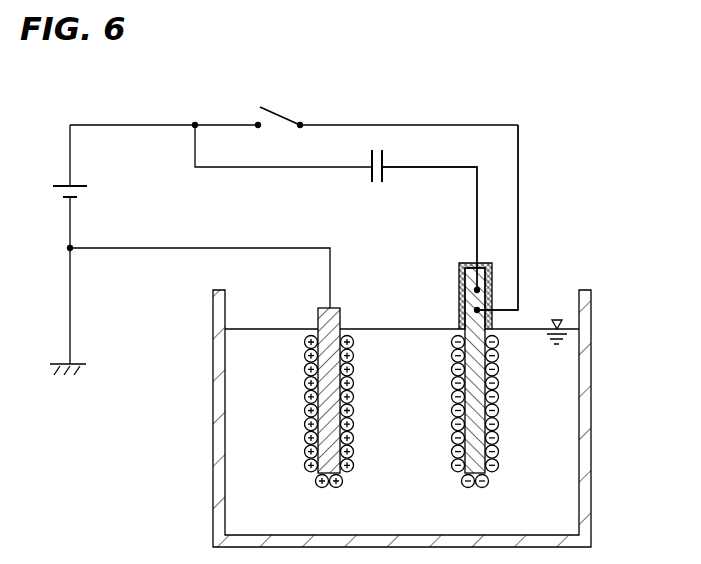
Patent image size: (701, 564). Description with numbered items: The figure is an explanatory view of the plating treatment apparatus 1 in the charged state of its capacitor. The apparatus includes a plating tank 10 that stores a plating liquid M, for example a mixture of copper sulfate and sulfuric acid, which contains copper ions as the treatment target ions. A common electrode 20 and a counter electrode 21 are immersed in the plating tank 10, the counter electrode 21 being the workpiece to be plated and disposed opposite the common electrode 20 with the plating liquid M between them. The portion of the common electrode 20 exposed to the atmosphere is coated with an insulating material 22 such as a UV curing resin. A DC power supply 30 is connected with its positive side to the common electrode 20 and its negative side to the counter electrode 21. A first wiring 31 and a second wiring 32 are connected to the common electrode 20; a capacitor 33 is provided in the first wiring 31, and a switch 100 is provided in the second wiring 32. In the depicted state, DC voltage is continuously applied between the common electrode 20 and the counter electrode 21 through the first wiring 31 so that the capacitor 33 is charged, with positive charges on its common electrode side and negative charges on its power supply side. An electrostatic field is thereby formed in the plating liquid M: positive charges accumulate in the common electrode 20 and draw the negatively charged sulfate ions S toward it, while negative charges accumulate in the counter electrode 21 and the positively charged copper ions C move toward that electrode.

The plating treatment apparatus 1 is at (353, 86).
The switch 100 is at (283, 117).
The DC power supply 30 is at (64, 184).
The capacitor 33 is at (367, 176).
The second wiring 32 is at (520, 176).
The first wiring 31 is at (476, 226).
The insulating material 22 is at (461, 289).
The counter electrode 21 is at (330, 437).
The common electrode 20 is at (494, 446).
The plating tank 10 is at (586, 442).
The plating liquid M is at (568, 362).
The copper ions C is at (338, 488).
The sulfate ions S is at (462, 488).